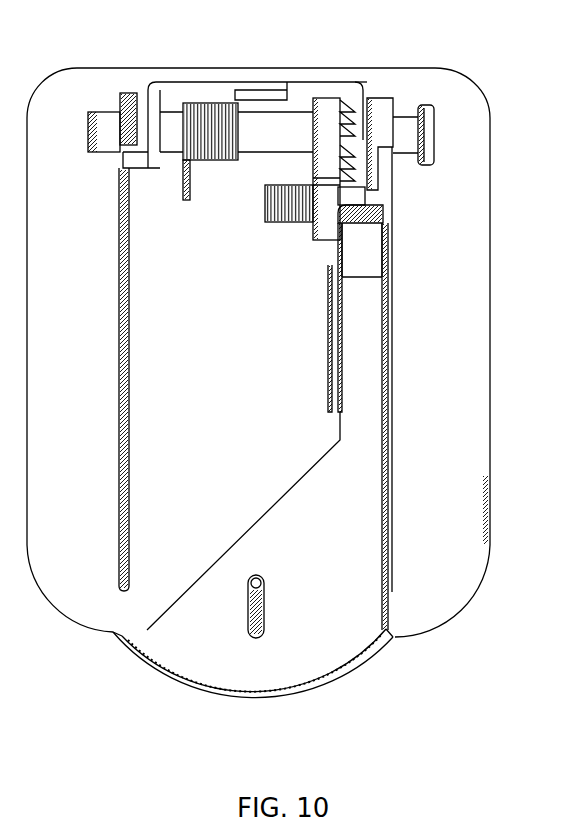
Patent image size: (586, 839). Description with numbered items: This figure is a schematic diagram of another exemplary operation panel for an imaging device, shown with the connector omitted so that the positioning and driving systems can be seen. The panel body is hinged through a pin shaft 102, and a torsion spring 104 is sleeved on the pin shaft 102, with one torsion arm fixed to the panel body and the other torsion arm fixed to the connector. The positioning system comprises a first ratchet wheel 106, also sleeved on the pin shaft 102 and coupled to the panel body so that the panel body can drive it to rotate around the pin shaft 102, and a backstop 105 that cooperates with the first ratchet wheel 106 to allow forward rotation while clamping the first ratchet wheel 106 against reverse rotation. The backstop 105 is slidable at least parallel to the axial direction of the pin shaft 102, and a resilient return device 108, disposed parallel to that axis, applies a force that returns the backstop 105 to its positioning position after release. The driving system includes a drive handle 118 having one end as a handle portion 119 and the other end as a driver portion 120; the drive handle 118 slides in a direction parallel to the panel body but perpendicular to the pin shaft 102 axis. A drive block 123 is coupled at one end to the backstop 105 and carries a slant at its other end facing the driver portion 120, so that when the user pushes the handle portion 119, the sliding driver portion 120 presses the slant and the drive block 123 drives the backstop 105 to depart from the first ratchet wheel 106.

The pin shaft 102 is at (422, 153).
The torsion spring 104 is at (205, 162).
The backstop 105 is at (325, 122).
The first ratchet wheel 106 is at (363, 150).
The resilient return device 108 is at (287, 222).
The drive handle 118 is at (352, 587).
The handle portion 119 is at (317, 687).
The driver portion 120 is at (360, 252).
The drive block 123 is at (333, 237).